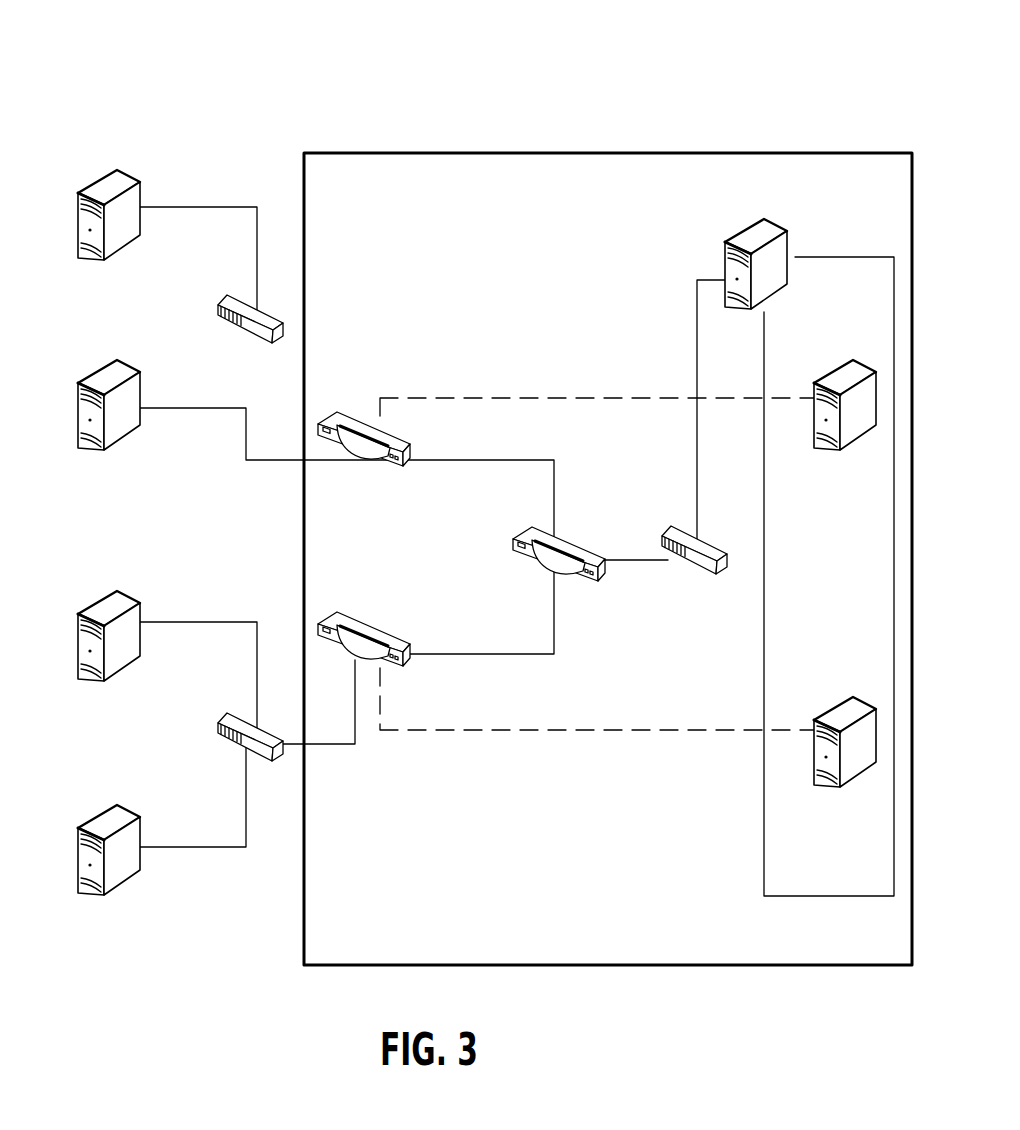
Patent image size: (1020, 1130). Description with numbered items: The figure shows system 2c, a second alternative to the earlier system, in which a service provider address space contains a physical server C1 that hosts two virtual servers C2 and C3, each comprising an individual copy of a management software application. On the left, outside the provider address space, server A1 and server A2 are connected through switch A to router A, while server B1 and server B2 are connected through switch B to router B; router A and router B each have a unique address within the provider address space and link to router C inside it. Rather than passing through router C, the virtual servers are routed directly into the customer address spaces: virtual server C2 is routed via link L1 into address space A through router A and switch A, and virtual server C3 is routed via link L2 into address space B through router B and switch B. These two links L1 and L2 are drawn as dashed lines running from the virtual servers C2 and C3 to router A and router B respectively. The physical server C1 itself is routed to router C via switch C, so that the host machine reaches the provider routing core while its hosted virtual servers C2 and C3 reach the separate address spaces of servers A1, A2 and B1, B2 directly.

The system 2c is at (186, 88).
The server A1 is at (91, 198).
The server A2 is at (93, 420).
The server B1 is at (91, 621).
The server B2 is at (93, 868).
The physical server C1 is at (754, 248).
The virtual server C2 is at (826, 431).
The virtual server C3 is at (826, 768).
The link L1 is at (597, 398).
The link L2 is at (596, 731).